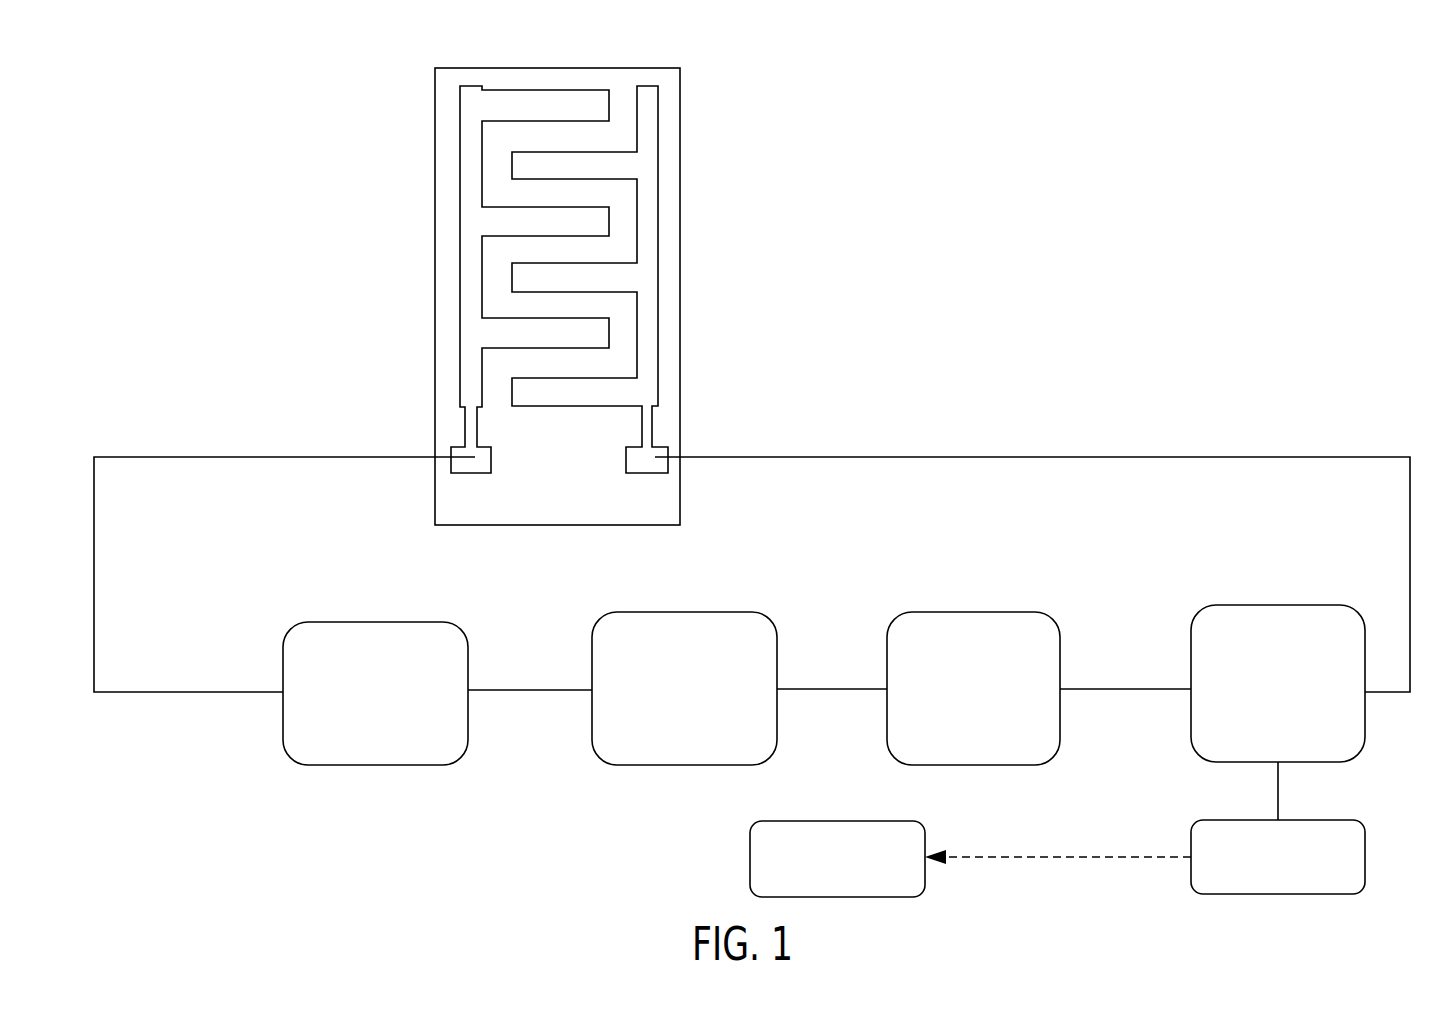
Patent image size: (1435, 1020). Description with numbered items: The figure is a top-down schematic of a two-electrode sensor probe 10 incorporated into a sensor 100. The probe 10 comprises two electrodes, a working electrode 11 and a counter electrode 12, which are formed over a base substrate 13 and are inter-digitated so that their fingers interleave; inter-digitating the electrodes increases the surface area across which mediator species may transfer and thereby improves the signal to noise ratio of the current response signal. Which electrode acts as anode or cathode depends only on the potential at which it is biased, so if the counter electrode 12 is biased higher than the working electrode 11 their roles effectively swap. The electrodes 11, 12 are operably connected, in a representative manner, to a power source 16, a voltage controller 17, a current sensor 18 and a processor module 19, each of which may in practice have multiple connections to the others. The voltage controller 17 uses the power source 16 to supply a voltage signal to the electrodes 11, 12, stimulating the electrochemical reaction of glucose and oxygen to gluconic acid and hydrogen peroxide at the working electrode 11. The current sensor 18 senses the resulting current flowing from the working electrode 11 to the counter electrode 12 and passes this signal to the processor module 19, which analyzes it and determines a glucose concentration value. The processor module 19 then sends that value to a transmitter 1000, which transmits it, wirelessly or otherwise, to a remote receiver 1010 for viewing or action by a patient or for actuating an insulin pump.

The sensor 100 is at (118, 122).
The two-electrode sensor probe 10 is at (395, 191).
The working electrode 11 is at (472, 268).
The counter electrode 12 is at (638, 275).
The base substrate 13 is at (682, 163).
The power source 16 is at (283, 645).
The voltage controller 17 is at (592, 637).
The current sensor 18 is at (887, 637).
The processor module 19 is at (1191, 632).
The transmitter 1000 is at (1191, 845).
The remote receiver 1010 is at (750, 858).